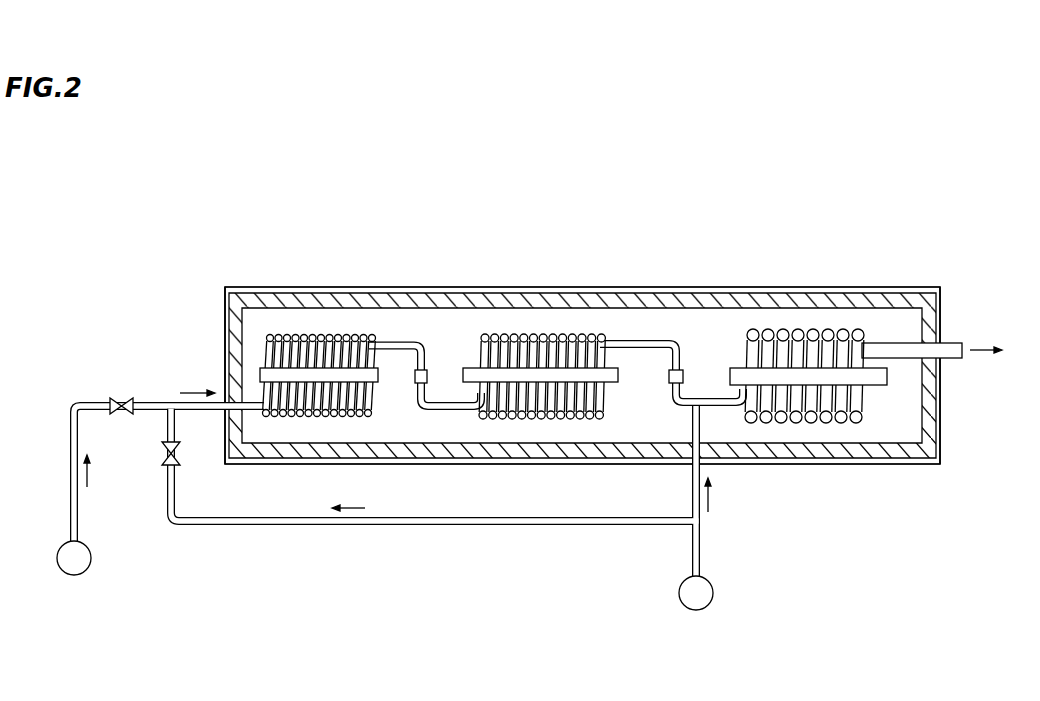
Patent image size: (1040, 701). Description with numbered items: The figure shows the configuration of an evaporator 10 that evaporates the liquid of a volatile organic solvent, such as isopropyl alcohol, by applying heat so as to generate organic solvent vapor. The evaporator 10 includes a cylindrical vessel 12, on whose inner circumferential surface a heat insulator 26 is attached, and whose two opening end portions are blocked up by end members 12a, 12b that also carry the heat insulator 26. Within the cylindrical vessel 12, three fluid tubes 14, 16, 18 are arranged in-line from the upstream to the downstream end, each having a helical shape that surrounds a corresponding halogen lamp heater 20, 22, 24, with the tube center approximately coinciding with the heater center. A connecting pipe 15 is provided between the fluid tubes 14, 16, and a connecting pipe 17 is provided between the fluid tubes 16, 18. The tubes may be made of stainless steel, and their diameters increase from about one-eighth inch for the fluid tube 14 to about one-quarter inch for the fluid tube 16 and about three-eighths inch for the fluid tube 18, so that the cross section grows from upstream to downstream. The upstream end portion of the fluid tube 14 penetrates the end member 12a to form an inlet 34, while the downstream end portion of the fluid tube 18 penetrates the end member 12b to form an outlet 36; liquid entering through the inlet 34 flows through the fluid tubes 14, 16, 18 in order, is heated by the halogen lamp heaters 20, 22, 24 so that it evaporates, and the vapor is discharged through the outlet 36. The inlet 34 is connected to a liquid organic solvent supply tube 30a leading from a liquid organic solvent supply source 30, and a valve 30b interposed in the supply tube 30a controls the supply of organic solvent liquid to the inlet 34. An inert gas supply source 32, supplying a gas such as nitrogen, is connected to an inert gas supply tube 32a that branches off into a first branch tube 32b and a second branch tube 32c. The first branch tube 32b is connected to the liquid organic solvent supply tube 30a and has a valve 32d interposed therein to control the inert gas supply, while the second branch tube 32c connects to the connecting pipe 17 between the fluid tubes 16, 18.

The evaporator 10 is at (712, 282).
The cylindrical vessel 12 is at (343, 292).
The end member 12a is at (225, 305).
The end member 12b is at (937, 308).
The heat insulator 26 is at (567, 303).
The fluid tube 14 is at (365, 403).
The fluid tube 16 is at (608, 403).
The fluid tube 18 is at (873, 403).
The halogen lamp heater 20 is at (379, 375).
The halogen lamp heater 22 is at (619, 375).
The halogen lamp heater 24 is at (888, 377).
The connecting pipe 15 is at (445, 404).
The connecting pipe 17 is at (702, 400).
The liquid organic solvent supply source 30 is at (83, 562).
The liquid organic solvent supply tube 30a is at (69, 423).
The valve 30b is at (122, 398).
The inert gas supply source 32 is at (705, 596).
The inert gas supply tube 32a is at (700, 543).
The first branch tube 32b is at (480, 525).
The second branch tube 32c is at (700, 508).
The valve 32d is at (162, 453).
The inlet 34 is at (227, 410).
The outlet 36 is at (950, 360).